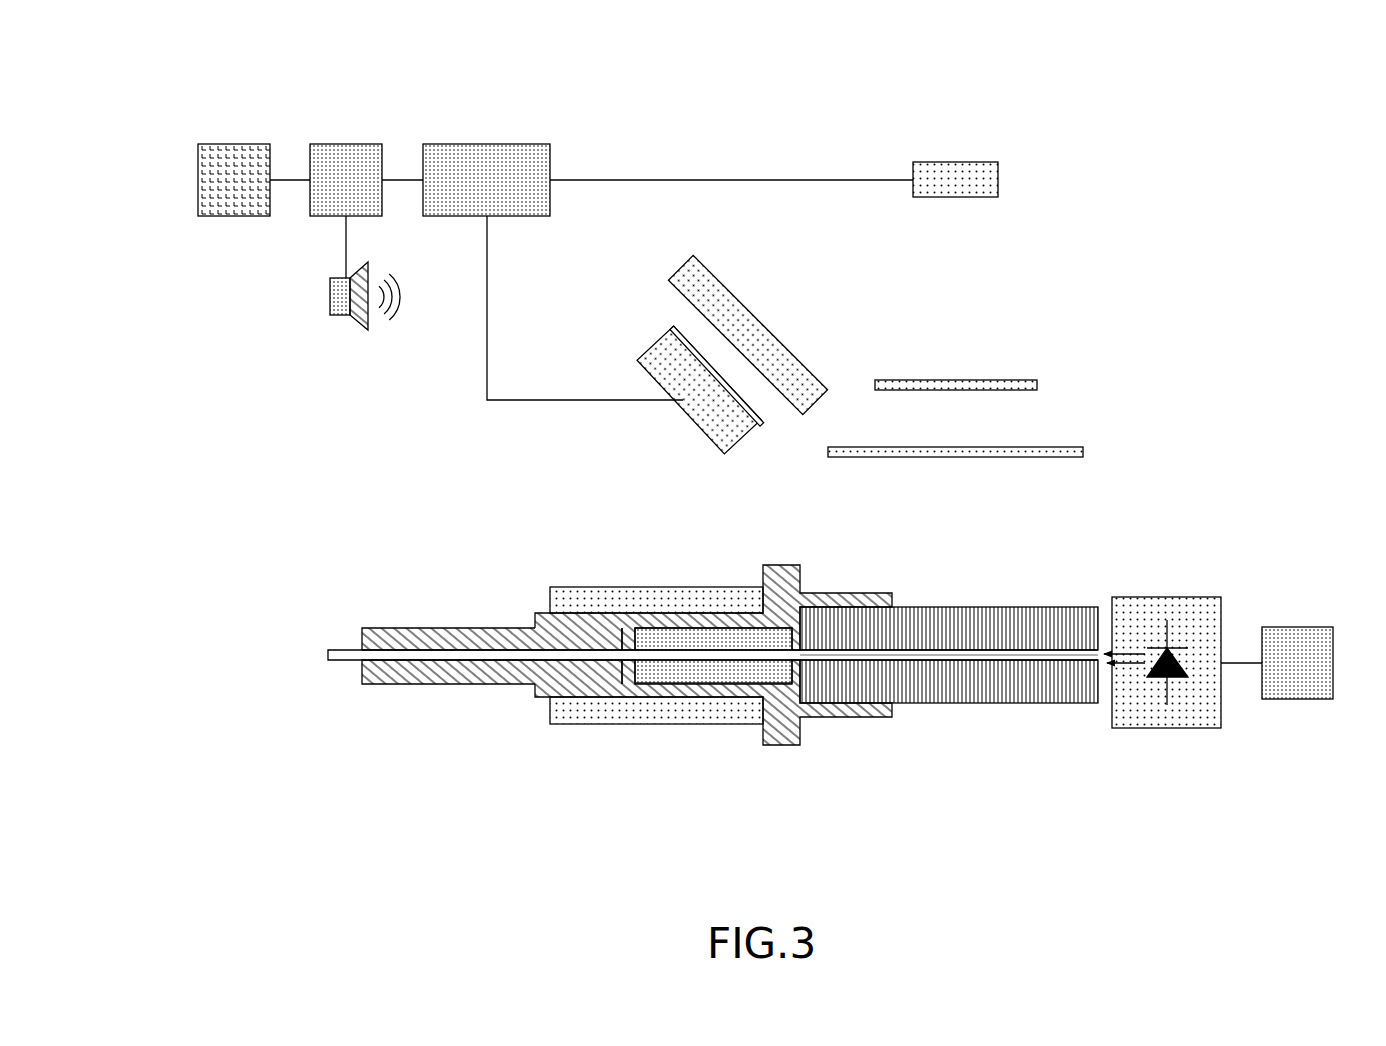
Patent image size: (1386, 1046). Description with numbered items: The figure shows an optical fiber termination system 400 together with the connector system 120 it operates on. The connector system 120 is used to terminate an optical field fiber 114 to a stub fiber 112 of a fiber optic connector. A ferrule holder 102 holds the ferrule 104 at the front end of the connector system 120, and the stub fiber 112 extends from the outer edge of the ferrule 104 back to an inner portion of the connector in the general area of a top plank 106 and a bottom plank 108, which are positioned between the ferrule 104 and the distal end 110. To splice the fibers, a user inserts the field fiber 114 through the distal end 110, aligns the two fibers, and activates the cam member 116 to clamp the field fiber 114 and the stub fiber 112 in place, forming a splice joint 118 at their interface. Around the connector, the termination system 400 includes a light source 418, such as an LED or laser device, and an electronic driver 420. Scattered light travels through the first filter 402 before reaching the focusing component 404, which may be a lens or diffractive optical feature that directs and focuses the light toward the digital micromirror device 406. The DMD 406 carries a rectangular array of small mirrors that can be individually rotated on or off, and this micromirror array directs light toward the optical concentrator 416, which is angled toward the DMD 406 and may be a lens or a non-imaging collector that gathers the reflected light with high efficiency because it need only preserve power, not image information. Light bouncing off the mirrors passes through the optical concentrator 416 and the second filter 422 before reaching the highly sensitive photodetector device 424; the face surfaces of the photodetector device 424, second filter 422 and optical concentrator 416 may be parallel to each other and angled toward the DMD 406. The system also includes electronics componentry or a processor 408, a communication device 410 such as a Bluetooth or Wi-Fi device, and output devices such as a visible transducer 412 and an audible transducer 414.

The optical fiber termination system 400 is at (1168, 118).
The first filter 402 is at (1083, 447).
The focusing component 404 is at (1037, 380).
The digital micromirror device (DMD) 406 is at (955, 178).
The processor 408 is at (492, 172).
The communication device 410 is at (349, 172).
The visible transducer 412 is at (230, 172).
The audible transducer 414 is at (338, 305).
The optical concentrator 416 is at (738, 322).
The light source 418 is at (1193, 623).
The electronic driver 420 is at (1287, 642).
The second filter 422 is at (679, 332).
The photodetector device 424 is at (715, 412).
The connector system 120 is at (400, 540).
The ferrule holder 102 is at (847, 720).
The ferrule 104 is at (1003, 630).
The top plank 106 is at (655, 640).
The bottom plank 108 is at (663, 672).
The distal end 110 is at (340, 635).
The stub fiber 112 is at (977, 655).
The field fiber 114 is at (340, 657).
The cam member 116 is at (598, 714).
The splice joint 118 is at (713, 655).